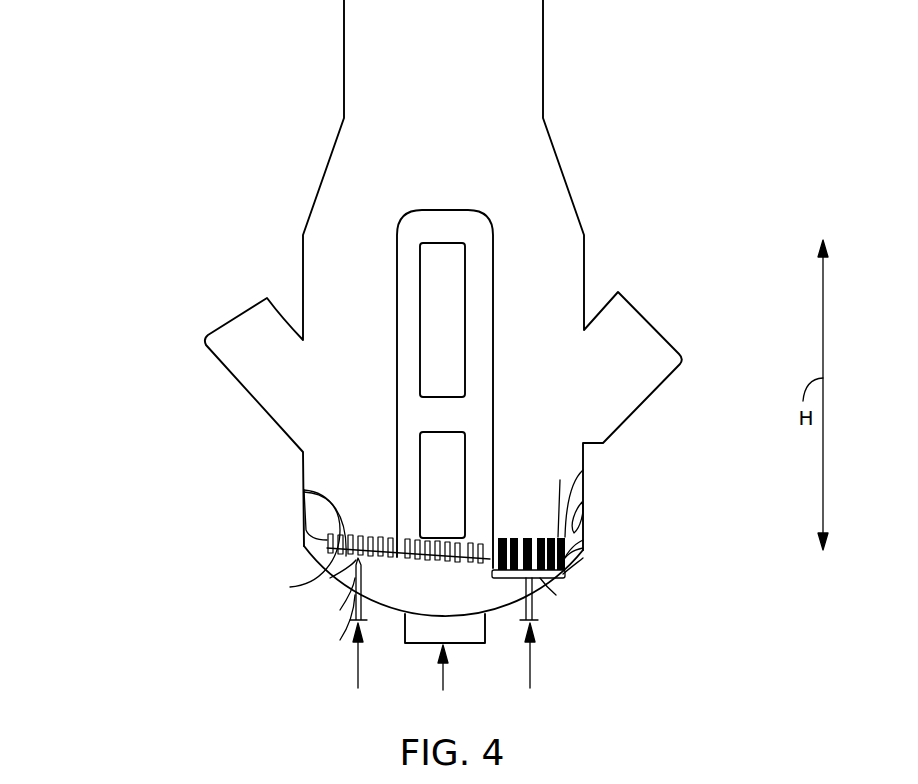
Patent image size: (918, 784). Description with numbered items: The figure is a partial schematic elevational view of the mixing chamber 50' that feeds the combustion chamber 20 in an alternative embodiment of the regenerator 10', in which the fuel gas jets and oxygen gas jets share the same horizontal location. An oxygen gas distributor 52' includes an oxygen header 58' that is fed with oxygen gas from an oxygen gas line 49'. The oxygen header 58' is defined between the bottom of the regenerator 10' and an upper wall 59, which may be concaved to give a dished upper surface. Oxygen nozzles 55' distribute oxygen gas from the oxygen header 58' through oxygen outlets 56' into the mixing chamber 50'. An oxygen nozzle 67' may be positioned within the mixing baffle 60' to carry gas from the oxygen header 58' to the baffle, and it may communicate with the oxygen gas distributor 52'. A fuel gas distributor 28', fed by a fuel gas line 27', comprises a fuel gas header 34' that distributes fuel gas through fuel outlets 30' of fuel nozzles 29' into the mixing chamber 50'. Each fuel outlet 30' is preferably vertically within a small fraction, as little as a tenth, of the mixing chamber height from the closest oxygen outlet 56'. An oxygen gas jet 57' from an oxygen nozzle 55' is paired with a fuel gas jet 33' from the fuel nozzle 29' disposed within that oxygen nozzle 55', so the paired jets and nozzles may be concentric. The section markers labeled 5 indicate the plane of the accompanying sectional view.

The combustion chamber 20 is at (538, 94).
The mixing baffle 60' is at (473, 389).
The oxygen gas distributor 52' is at (443, 581).
The mixing chamber 50' is at (365, 550).
The oxygen gas jet 57' is at (531, 519).
The fuel gas jet 33' is at (528, 529).
The oxygen header 58' is at (509, 622).
The oxygen nozzle 67' is at (377, 606).
The fuel gas line 27' is at (448, 665).
The oxygen gas line 49' is at (457, 667).
The fuel outlet 30' is at (420, 501).
The oxygen outlet 56' is at (452, 461).
The oxygen nozzle 55' is at (478, 544).
The upper wall 59 is at (582, 502).
The fuel nozzle 29' is at (424, 579).
The fuel gas header 34' is at (434, 611).
The fuel gas distributor 28' is at (428, 611).
The regenerator 10' is at (92, 466).
The section line marker 5 is at (165, 500).